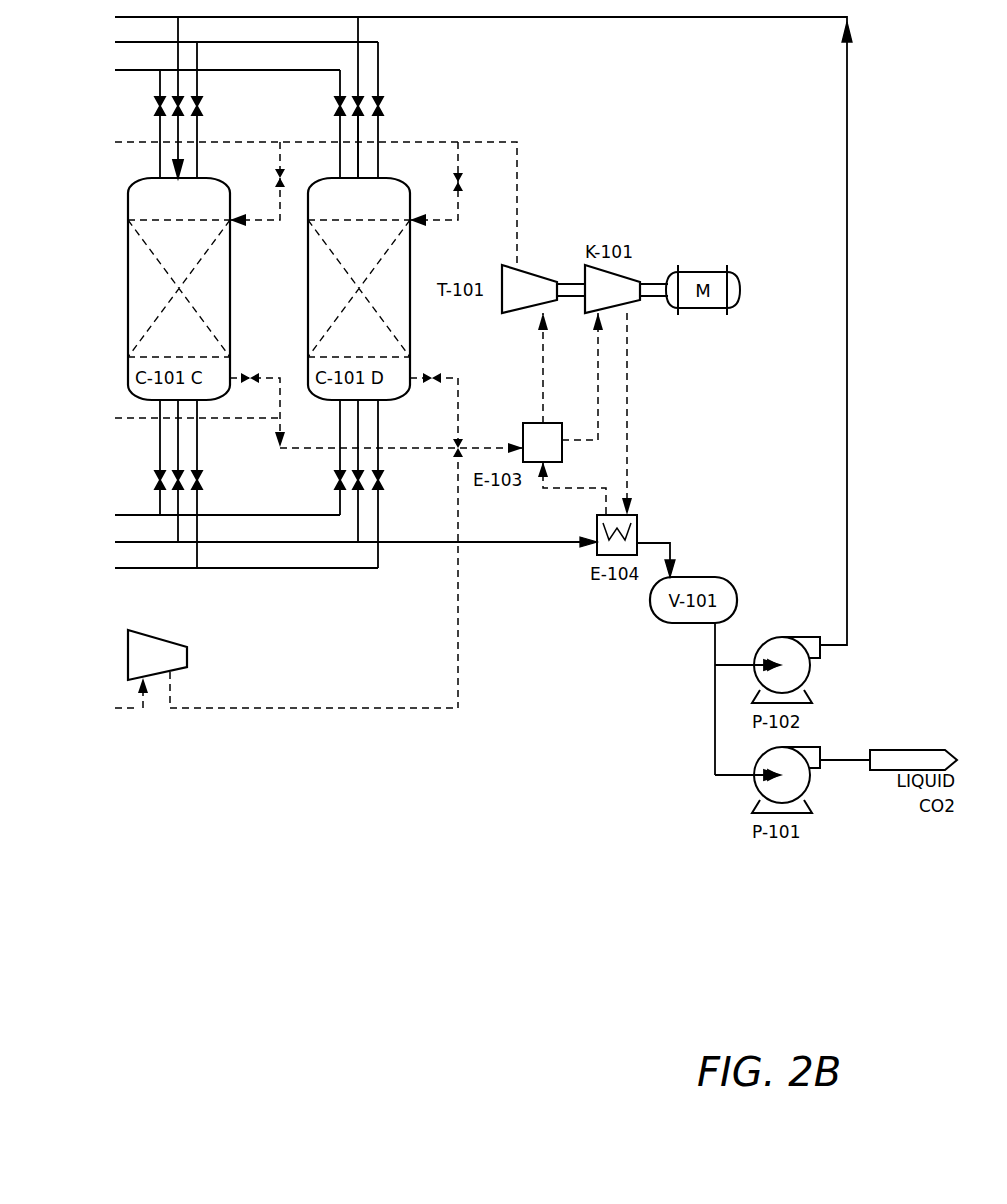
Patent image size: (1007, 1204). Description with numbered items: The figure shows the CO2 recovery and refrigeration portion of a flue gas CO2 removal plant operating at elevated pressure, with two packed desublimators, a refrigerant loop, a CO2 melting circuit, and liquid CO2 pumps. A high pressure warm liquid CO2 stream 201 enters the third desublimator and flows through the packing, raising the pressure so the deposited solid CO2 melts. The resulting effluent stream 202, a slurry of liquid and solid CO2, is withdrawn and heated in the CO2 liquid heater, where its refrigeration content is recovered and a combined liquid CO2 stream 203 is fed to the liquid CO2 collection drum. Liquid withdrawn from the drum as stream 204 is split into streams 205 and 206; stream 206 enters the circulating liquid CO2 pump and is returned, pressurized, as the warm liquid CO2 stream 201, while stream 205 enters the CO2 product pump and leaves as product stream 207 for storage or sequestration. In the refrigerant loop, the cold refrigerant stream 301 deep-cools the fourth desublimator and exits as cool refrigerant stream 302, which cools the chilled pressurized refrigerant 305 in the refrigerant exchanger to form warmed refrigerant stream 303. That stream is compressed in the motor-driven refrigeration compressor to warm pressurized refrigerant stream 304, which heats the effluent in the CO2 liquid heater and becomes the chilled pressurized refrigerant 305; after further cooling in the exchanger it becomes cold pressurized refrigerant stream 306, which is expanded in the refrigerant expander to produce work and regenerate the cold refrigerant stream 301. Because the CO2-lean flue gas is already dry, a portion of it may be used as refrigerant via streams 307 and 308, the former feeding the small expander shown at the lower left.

The high pressure warm liquid CO2 stream 201 is at (632, 18).
The effluent stream 202 is at (430, 542).
The combined liquid CO2 stream 203 is at (670, 543).
The liquid withdrawn from the liquid CO2 collection drum 204 is at (715, 640).
The CO2 product pump feed stream 205 is at (715, 735).
The circulating liquid CO2 pump feed stream 206 is at (738, 668).
The CO2 product stream 207 is at (845, 760).
The cold refrigerant stream 301 is at (433, 142).
The cool refrigerant stream 302 is at (486, 447).
The warmed refrigerant stream 303 is at (598, 405).
The warm pressurized refrigerant stream 304 is at (627, 383).
The chilled pressurized refrigerant 305 is at (590, 490).
The cold pressurized refrigerant stream 306 is at (543, 353).
The CO2-lean gas refrigerant stream 307 is at (130, 708).
The CO2-lean gas refrigerant stream 308 is at (458, 675).